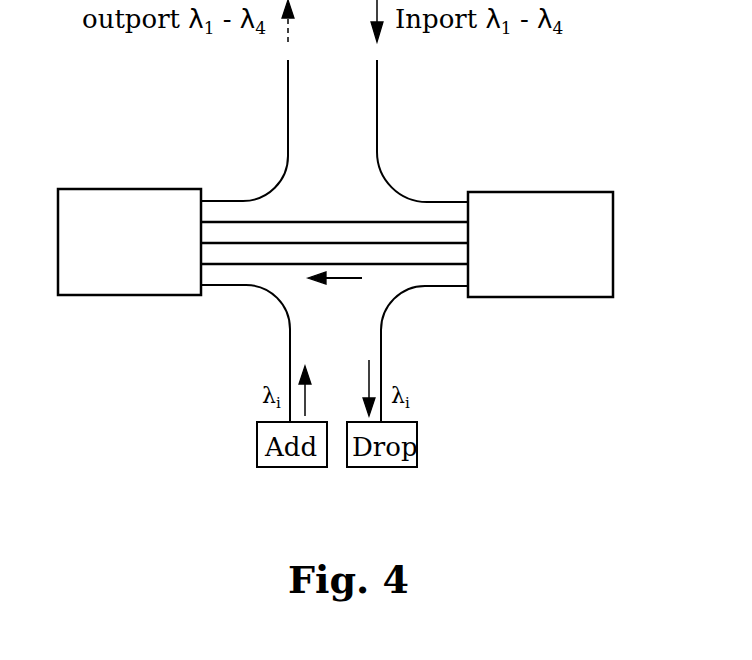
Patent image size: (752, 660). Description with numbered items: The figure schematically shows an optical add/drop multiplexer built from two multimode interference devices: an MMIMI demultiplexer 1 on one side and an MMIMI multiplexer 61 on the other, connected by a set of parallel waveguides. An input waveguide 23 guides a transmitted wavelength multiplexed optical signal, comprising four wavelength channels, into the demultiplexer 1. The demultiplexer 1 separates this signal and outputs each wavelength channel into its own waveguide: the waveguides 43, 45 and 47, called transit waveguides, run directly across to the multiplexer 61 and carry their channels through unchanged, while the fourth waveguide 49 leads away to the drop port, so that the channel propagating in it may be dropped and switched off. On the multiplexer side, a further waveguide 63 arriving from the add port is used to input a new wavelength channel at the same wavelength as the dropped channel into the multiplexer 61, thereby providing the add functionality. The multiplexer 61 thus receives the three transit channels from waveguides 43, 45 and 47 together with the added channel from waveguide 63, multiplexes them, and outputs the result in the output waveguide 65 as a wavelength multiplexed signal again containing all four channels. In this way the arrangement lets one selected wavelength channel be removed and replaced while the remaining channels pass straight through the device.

The MMIMI demultiplexer 1 is at (568, 191).
The MMIMI multiplexer 61 is at (122, 188).
The waveguide 23 is at (378, 108).
The waveguide 65 is at (288, 108).
The waveguide 43 is at (347, 222).
The waveguide 45 is at (410, 243).
The waveguide 63 is at (290, 350).
The waveguide 47 is at (425, 266).
The waveguide 49 is at (382, 352).